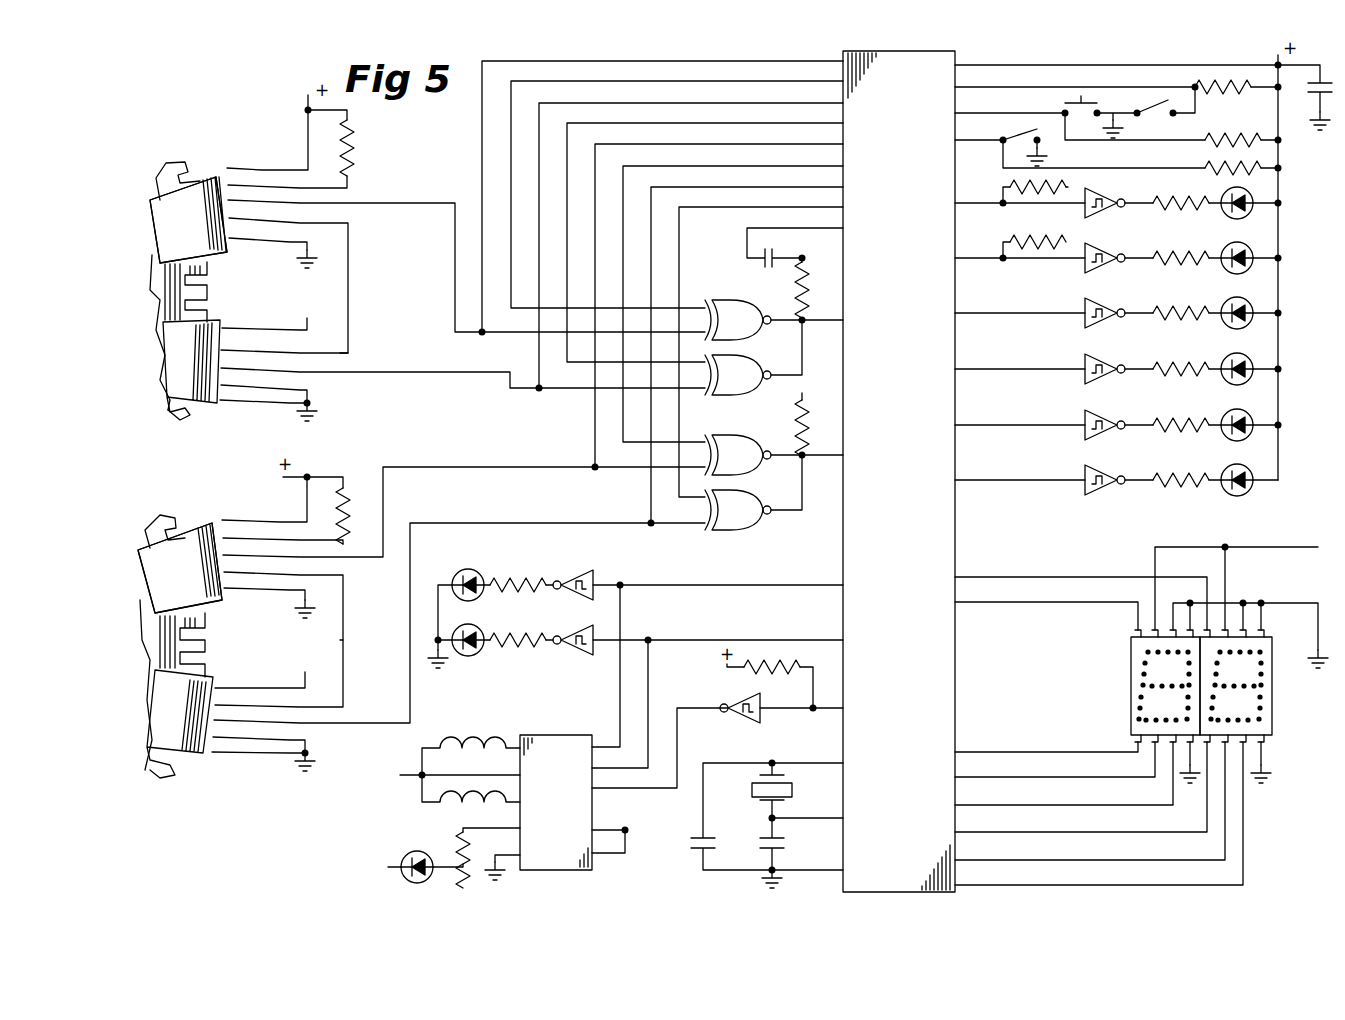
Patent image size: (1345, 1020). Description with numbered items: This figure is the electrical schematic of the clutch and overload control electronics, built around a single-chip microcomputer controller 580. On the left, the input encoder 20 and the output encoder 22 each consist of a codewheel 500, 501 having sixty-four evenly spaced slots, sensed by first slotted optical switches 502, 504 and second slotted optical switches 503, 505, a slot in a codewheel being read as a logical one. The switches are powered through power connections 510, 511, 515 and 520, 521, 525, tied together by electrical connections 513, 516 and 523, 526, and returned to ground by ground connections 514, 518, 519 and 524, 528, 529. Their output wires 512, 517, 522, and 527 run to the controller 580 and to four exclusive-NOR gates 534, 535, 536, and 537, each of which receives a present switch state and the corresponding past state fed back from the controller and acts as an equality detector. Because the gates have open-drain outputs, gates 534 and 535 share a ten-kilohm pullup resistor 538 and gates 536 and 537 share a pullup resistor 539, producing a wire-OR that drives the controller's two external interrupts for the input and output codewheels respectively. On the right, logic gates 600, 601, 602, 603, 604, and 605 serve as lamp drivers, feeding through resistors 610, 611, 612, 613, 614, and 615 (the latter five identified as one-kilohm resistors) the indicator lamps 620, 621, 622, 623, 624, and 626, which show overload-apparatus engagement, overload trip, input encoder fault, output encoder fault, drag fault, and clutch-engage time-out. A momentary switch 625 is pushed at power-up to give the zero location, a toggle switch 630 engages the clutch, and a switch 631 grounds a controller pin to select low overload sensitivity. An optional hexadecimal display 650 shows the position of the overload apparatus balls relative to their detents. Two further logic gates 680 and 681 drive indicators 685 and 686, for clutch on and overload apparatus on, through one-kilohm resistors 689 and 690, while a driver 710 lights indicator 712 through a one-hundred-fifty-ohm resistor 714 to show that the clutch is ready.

The input encoder 20 is at (222, 152).
The output encoder 22 is at (222, 510).
The input codewheel 500 is at (162, 288).
The output codewheel 501 is at (160, 648).
The first slotted optical switch 502 is at (168, 198).
The second slotted optical switch 503 is at (170, 368).
The first slotted optical switch 504 is at (166, 560).
The second slotted optical switch 505 is at (168, 690).
The power connection 510 is at (304, 136).
The power connection 511 is at (347, 186).
The output wire 512 is at (437, 208).
The electrical connection 513 is at (350, 296).
The ground connection 514 is at (295, 248).
The power connection 515 is at (296, 330).
The electrical connection 516 is at (350, 354).
The output wire 517 is at (466, 376).
The ground connection 518 is at (305, 386).
The ground connection 519 is at (290, 404).
The power connection 520 is at (285, 520).
The power connection 521 is at (350, 545).
The output wire 522 is at (500, 465).
The electrical connection 523 is at (330, 572).
The ground connection 524 is at (290, 598).
The power connection 525 is at (296, 684).
The electrical connection 526 is at (346, 640).
The output wire 527 is at (553, 520).
The ground connection 528 is at (298, 738).
The ground connection 529 is at (290, 758).
The exclusive-NOR gate 534 is at (720, 296).
The exclusive-NOR gate 535 is at (720, 392).
The exclusive-NOR gate 536 is at (745, 466).
The exclusive-NOR gate 537 is at (750, 518).
The pullup resistor 538 is at (794, 288).
The pullup resistor 539 is at (797, 416).
The microcomputer controller 580 is at (899, 471).
The logic gate 600 is at (1104, 196).
The logic gate 601 is at (1082, 270).
The logic gate 602 is at (1082, 326).
The logic gate 603 is at (1082, 381).
The logic gate 604 is at (1082, 437).
The logic gate 605 is at (1082, 493).
The resistor 610 is at (1160, 210).
The one kilohm resistor 611 is at (1158, 266).
The one kilohm resistor 612 is at (1158, 320).
The one kilohm resistor 613 is at (1158, 376).
The one kilohm resistor 614 is at (1158, 432).
The one kilohm resistor 615 is at (1158, 488).
The indicator lamp 620 is at (1228, 218).
The indicator lamp 621 is at (1228, 274).
The indicator lamp 622 is at (1228, 328).
The indicator lamp 623 is at (1228, 384).
The indicator lamp 624 is at (1228, 440).
The momentary switch 625 is at (1062, 103).
The indicator lamp 626 is at (1248, 496).
The toggle switch 630 is at (1162, 116).
The sensitivity switch 631 is at (1045, 140).
The hexadecimal display 650 is at (1128, 692).
The logic gate 680 is at (580, 570).
The logic gate 681 is at (578, 656).
The indicator 685 is at (460, 567).
The indicator 686 is at (468, 658).
The one kilohm resistor 689 is at (502, 578).
The one kilohm resistor 690 is at (524, 648).
The driver 710 is at (559, 794).
The indicator 712 is at (390, 858).
The 150 ohm resistor 714 is at (452, 838).